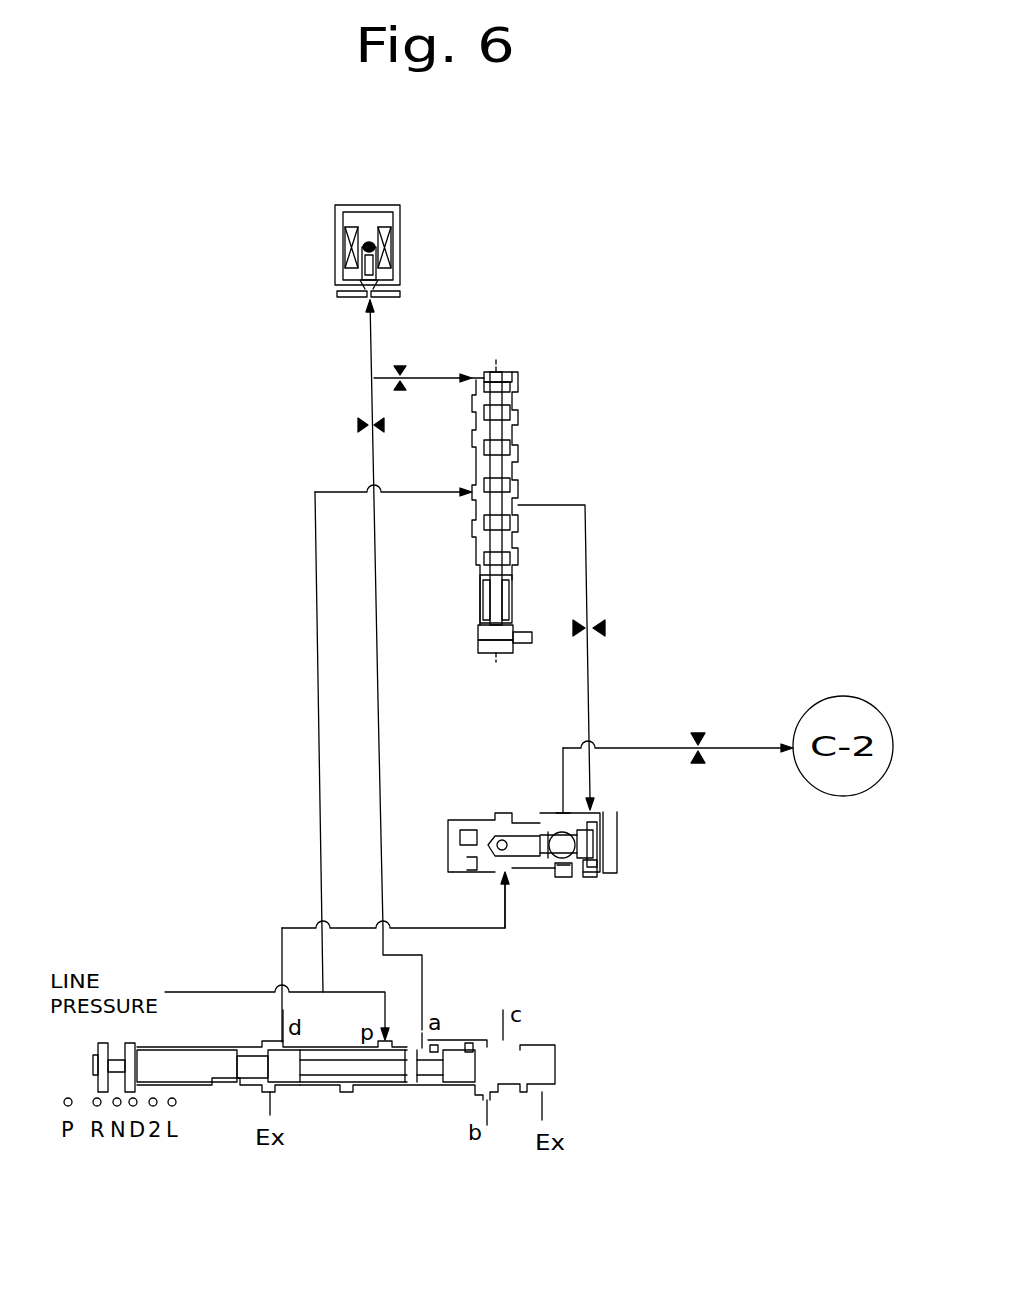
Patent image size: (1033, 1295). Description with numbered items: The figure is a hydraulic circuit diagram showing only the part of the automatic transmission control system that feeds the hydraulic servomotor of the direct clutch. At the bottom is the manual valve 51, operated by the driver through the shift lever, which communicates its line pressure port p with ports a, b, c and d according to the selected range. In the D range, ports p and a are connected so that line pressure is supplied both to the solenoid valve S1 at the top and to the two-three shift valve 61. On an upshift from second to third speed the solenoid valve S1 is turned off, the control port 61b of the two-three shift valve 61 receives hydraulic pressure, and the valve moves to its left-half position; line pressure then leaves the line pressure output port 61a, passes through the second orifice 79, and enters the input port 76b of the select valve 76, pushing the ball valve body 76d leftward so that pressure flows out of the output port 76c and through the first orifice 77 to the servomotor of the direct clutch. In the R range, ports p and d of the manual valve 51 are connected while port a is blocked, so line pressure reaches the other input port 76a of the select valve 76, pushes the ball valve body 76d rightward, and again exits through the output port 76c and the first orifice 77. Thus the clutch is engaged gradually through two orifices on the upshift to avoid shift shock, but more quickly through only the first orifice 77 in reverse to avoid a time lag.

The solenoid valve S1 is at (405, 212).
The 2-3 shift valve 61 is at (521, 402).
The line pressure output port 61a is at (520, 504).
The control port 61b is at (472, 368).
The second orifice 79 is at (599, 620).
The first orifice 77 is at (700, 722).
The select valve 76 is at (628, 876).
The input port 76a is at (508, 880).
The input port 76b is at (600, 822).
The output port 76c is at (558, 808).
The ball valve body 76d is at (566, 876).
The manual valve 51 is at (340, 1093).